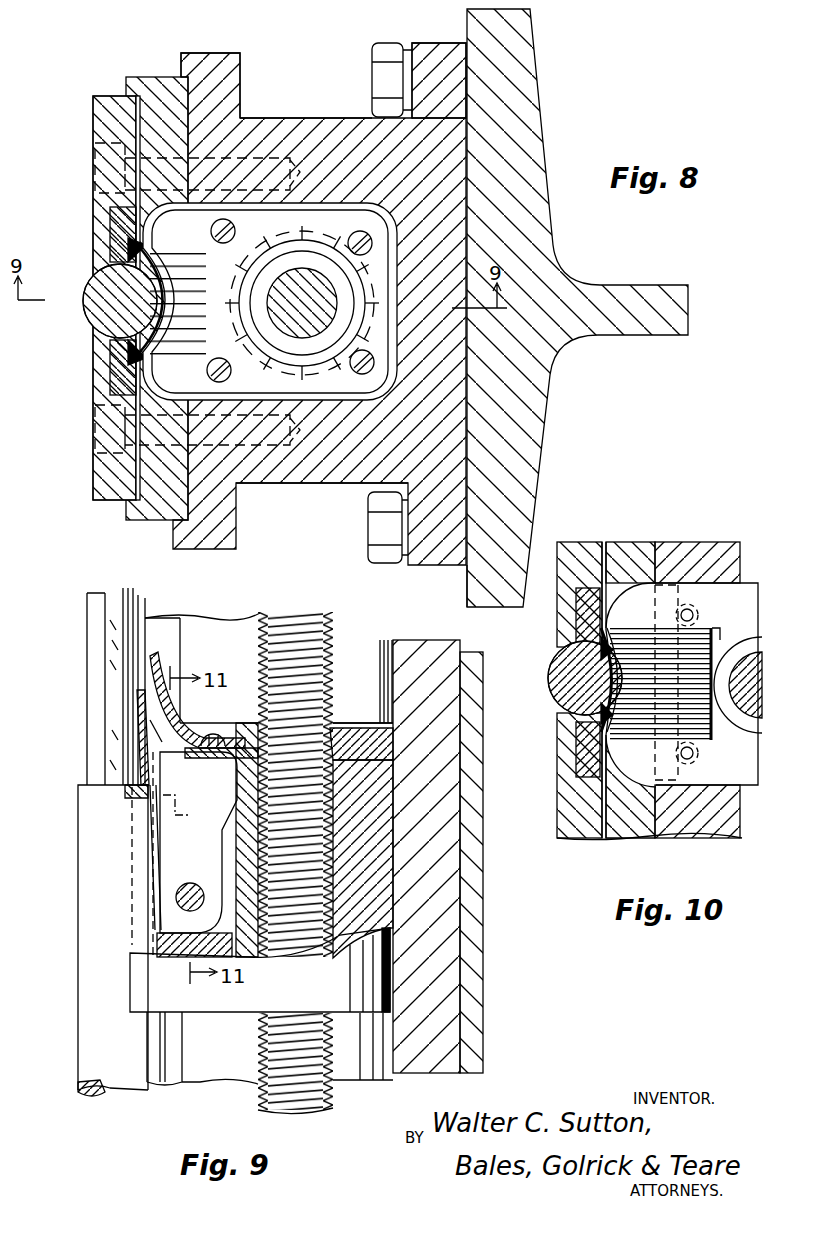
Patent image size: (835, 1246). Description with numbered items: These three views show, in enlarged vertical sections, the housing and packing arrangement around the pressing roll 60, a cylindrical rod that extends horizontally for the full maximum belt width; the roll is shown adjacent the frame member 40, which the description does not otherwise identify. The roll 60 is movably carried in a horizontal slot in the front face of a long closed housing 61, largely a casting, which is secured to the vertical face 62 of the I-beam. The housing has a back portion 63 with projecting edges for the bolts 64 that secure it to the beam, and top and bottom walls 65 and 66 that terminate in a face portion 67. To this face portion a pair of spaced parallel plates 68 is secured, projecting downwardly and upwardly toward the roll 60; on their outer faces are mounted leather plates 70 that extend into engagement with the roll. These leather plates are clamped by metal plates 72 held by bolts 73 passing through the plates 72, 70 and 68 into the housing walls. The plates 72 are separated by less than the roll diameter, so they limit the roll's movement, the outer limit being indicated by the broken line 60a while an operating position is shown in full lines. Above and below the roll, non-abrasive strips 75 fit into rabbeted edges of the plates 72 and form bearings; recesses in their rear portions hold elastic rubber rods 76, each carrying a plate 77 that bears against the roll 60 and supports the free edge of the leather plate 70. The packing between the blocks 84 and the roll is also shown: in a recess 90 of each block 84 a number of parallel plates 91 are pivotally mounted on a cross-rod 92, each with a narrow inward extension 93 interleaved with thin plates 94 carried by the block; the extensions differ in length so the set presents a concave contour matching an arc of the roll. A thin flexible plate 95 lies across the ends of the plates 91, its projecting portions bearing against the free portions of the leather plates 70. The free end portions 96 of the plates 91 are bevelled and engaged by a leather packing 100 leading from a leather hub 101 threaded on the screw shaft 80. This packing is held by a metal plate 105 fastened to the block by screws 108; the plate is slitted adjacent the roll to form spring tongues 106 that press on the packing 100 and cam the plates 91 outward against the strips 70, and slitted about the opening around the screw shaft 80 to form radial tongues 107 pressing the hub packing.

In FIG. 8, the housing body 40 is at (535, 118).
In FIG. 9, the housing body 40 is at (470, 883).
In FIG. 8, the pressing roll 60 is at (100, 326).
In FIG. 9, the pressing roll 60 is at (80, 920).
In FIG. 10, the pressing roll 60 is at (560, 683).
In FIG. 8, the broken line indicating outer limit 60a is at (95, 300).
In FIG. 8, the housing 61 is at (373, 165).
In FIG. 9, the housing 61 is at (445, 927).
In FIG. 10, the housing 61 is at (685, 830).
In FIG. 8, the vertical face of I-beam 62 is at (462, 579).
In FIG. 8, the back portion 63 is at (445, 58).
In FIG. 8, the bolts 64 is at (385, 50).
In FIG. 8, the top wall 65 is at (290, 118).
In FIG. 8, the bottom wall 66 is at (296, 484).
In FIG. 8, the face portion 67 is at (220, 60).
In FIG. 8, the spaced parallel plates 68 is at (160, 77).
In FIG. 8, the leather plates 70 is at (137, 100).
In FIG. 9, the leather plates 70 is at (146, 613).
In FIG. 10, the leather plates 70 is at (607, 549).
In FIG. 8, the metal plates 72 is at (93, 120).
In FIG. 8, the bolts 73 is at (95, 153).
In FIG. 8, the non-abrasive material strips 75 is at (110, 217).
In FIG. 9, the non-abrasive material strips 75 is at (105, 606).
In FIG. 8, the elastic rods 76 is at (128, 244).
In FIG. 8, the plate 77 is at (143, 246).
In FIG. 9, the plate 77 is at (134, 603).
In FIG. 8, the screw shaft 80 is at (310, 321).
In FIG. 9, the screw shaft 80 is at (286, 622).
In FIG. 9, the blocks 84 is at (261, 1006).
In FIG. 10, the blocks 84 is at (710, 590).
In FIG. 9, the recess 90 is at (237, 905).
In FIG. 10, the recess 90 is at (712, 729).
In FIG. 9, the parallel plates 91 is at (175, 858).
In FIG. 10, the parallel plates 91 is at (637, 642).
In FIG. 9, the cross-rod 92 is at (176, 898).
In FIG. 10, the cross-rod 92 is at (687, 766).
In FIG. 10, the narrow inward extension 93 is at (660, 739).
In FIG. 9, the thin plates 94 is at (170, 929).
In FIG. 10, the thin plates 94 is at (716, 642).
In FIG. 9, the thin flexible plate 95 is at (140, 695).
In FIG. 10, the thin flexible plate 95 is at (600, 701).
In FIG. 9, the free end portions 96 is at (160, 732).
In FIG. 9, the leather packing 100 is at (160, 668).
In FIG. 9, the leather hub 101 is at (338, 735).
In FIG. 8, the metal plate 105 is at (270, 301).
In FIG. 9, the metal plate 105 is at (378, 740).
In FIG. 8, the spring tongues 106 is at (182, 256).
In FIG. 9, the spring tongues 106 is at (182, 722).
In FIG. 8, the radial tongues 107 is at (262, 261).
In FIG. 8, the screws 108 is at (350, 244).
In FIG. 9, the screws 108 is at (222, 738).